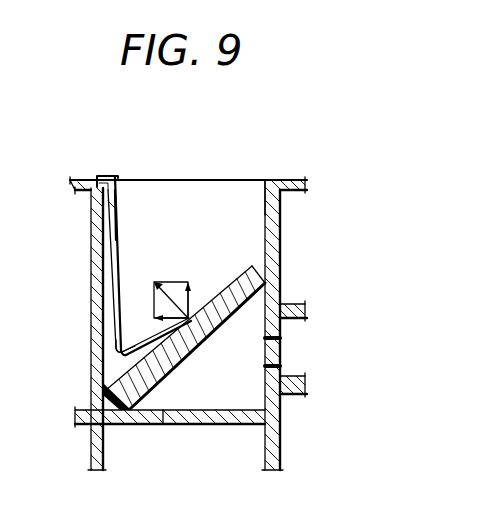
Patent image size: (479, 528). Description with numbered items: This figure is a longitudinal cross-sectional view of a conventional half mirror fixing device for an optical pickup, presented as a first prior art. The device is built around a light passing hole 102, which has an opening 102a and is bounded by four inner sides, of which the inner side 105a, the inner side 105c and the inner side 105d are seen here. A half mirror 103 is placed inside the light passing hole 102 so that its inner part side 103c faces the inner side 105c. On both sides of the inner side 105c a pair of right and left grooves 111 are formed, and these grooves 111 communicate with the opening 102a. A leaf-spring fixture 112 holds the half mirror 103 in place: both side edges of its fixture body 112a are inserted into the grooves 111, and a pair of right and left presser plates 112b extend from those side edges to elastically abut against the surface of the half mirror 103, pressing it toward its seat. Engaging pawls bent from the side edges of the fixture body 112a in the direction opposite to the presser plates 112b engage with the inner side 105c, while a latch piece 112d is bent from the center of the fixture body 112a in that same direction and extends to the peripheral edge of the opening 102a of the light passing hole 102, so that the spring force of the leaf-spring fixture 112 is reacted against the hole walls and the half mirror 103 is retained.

The light passing hole 102 is at (224, 208).
The opening of the light passing hole 102a is at (199, 178).
The half mirror 103 is at (243, 312).
The inner part side of the half mirror 103c is at (120, 413).
The inner side of the light passing hole 105a is at (255, 198).
The inner side of the light passing hole 105c is at (107, 253).
The inner side of the light passing hole 105d is at (270, 229).
The groove 111 is at (101, 377).
The leaf-spring fixture 112 is at (121, 262).
The fixture body 112a is at (122, 236).
The presser plate 112b is at (118, 353).
The latch piece 112d is at (108, 176).